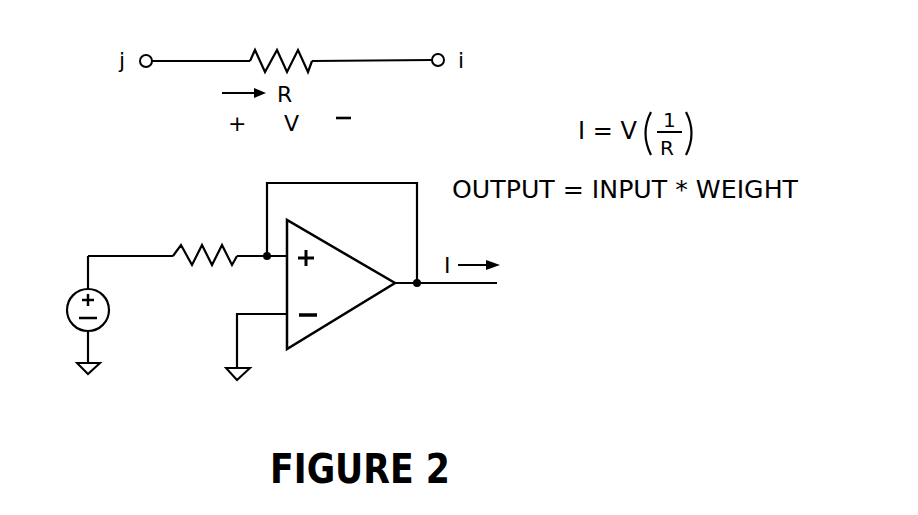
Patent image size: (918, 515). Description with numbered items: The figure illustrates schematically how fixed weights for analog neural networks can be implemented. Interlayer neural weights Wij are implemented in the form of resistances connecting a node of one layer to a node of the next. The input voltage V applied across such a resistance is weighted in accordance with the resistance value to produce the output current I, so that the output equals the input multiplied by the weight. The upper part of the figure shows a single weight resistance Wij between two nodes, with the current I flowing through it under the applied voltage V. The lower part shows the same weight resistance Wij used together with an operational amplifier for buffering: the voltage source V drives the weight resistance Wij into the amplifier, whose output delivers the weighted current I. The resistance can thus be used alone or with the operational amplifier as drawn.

The interlayer neural weight Wij is at (292, 39).
The output current I is at (236, 94).
The input voltage V is at (70, 315).